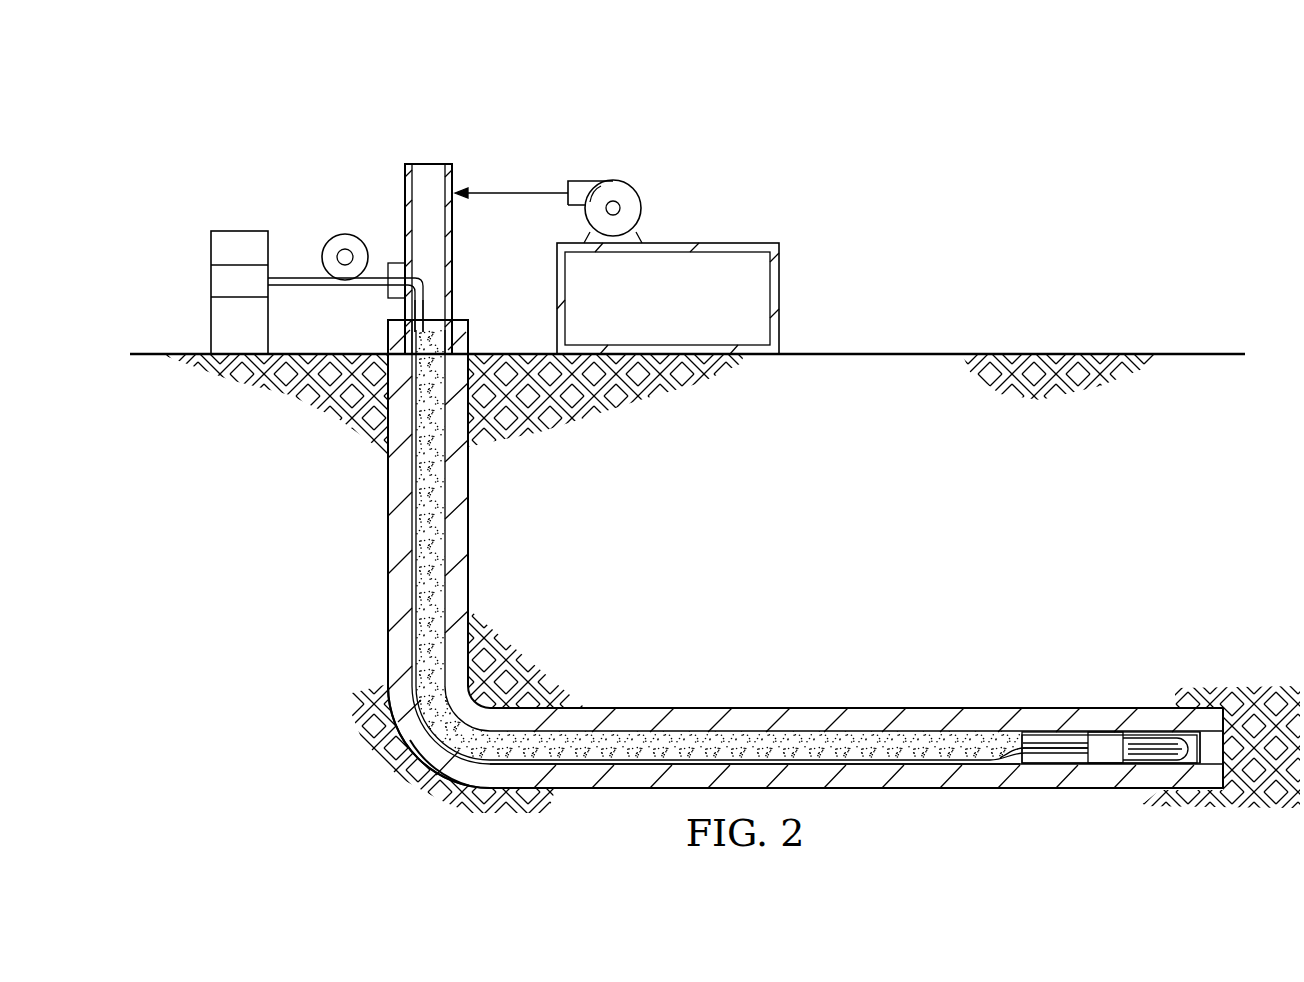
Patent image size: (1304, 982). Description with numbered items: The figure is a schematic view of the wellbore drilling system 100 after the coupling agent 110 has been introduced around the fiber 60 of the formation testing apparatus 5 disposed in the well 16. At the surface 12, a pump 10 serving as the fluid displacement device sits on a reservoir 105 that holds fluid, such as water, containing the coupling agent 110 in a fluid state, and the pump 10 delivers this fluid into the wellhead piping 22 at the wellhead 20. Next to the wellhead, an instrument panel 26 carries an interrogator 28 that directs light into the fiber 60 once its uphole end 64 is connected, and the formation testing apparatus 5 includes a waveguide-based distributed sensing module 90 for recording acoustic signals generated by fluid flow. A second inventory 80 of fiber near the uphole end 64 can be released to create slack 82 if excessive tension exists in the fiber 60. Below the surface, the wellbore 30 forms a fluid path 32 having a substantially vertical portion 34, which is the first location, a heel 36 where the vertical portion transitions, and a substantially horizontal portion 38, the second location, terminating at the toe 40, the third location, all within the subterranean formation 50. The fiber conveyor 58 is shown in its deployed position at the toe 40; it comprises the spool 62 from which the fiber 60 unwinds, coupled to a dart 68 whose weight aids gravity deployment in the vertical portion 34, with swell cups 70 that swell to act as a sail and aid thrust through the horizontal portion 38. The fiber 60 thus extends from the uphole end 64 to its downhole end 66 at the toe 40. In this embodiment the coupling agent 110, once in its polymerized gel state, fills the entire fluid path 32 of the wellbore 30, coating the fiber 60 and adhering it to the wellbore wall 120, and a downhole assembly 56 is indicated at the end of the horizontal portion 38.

The wellbore drilling system 100 is at (1152, 113).
The formation testing apparatus 5 is at (319, 141).
The pump 10 is at (611, 182).
The surface 12 is at (888, 354).
The well 16 is at (320, 528).
The wellhead 20 is at (481, 265).
The wellhead piping 22 is at (428, 163).
The instrument panel 26 is at (208, 258).
The interrogator 28 is at (220, 280).
The wellbore 30 is at (388, 652).
The fluid path 32 is at (913, 750).
The substantially vertical portion 34 is at (805, 554).
The heel 36 is at (424, 780).
The substantially horizontal portion 38 is at (804, 697).
The toe 40 is at (1197, 753).
The subterranean formation 50 is at (553, 558).
The downhole tool assembly 56 is at (1152, 732).
The fiber conveyor 58 is at (1151, 804).
The fiber 60 is at (718, 545).
The spool 62 is at (1067, 757).
The uphole end 64 is at (312, 287).
The downhole end 66 is at (1030, 740).
The dart 68 is at (1153, 740).
The swell cups 70 is at (1107, 753).
The second inventory 80 is at (334, 240).
The slack 82 is at (428, 311).
The waveguide-based distributed sensing module 90 is at (220, 323).
The reservoir 105 is at (782, 292).
The coupling agent 110 is at (690, 742).
The wellbore wall 120 is at (922, 766).